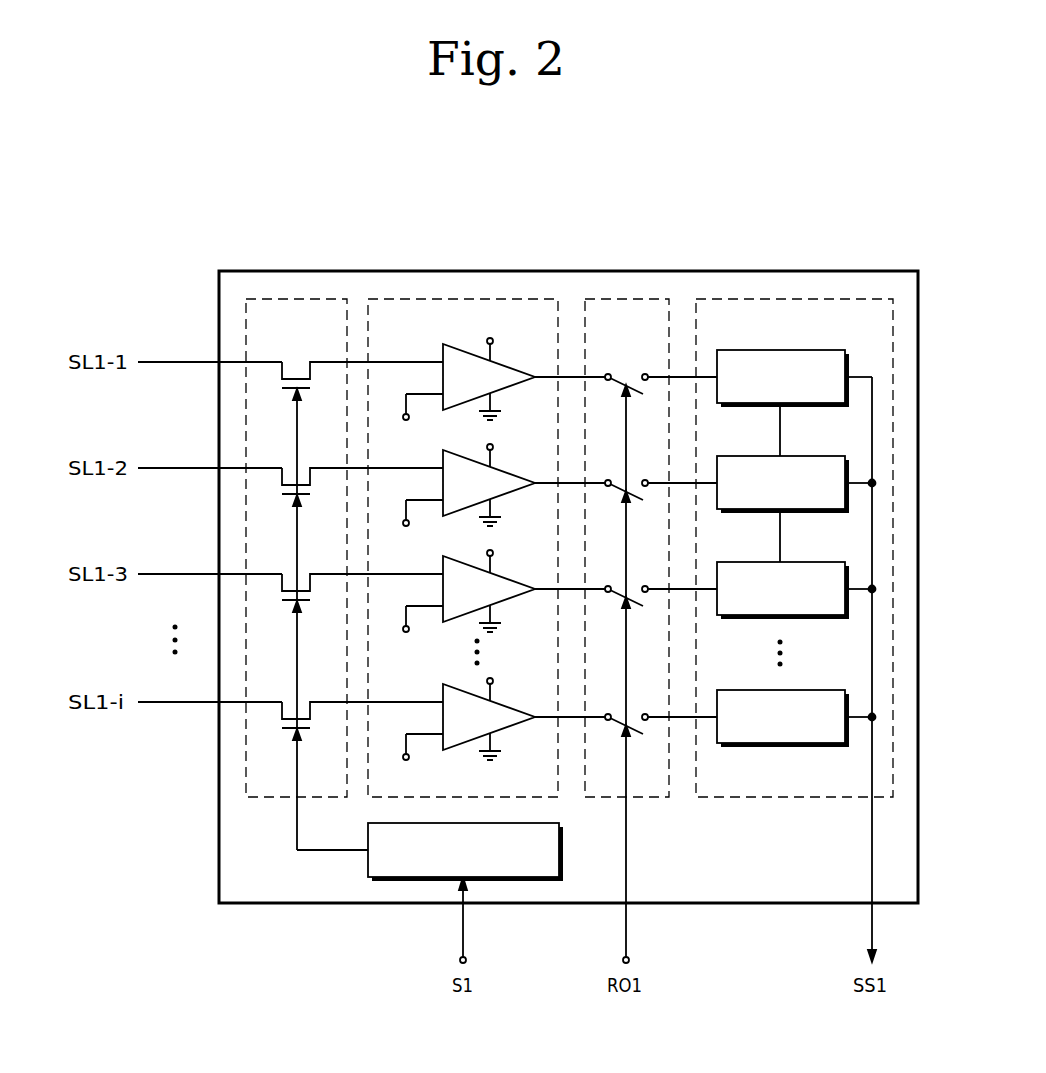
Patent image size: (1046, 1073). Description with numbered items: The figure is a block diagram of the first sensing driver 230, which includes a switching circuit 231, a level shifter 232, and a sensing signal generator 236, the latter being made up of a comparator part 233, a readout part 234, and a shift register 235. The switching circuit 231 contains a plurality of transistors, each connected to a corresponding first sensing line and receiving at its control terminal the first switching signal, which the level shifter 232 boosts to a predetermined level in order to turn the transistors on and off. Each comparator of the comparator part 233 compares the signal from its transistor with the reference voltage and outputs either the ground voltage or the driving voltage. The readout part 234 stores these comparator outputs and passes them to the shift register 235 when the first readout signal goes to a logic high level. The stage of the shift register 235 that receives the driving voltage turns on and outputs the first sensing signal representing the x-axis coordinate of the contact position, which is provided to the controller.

The first sensing driver 230 is at (851, 271).
The switching circuit 231 is at (303, 298).
The level shifter 232 is at (368, 864).
The comparator part 233 is at (514, 298).
The readout part 234 is at (626, 298).
The shift register 235 is at (745, 298).
The sensing signal generator 236 is at (770, 218).